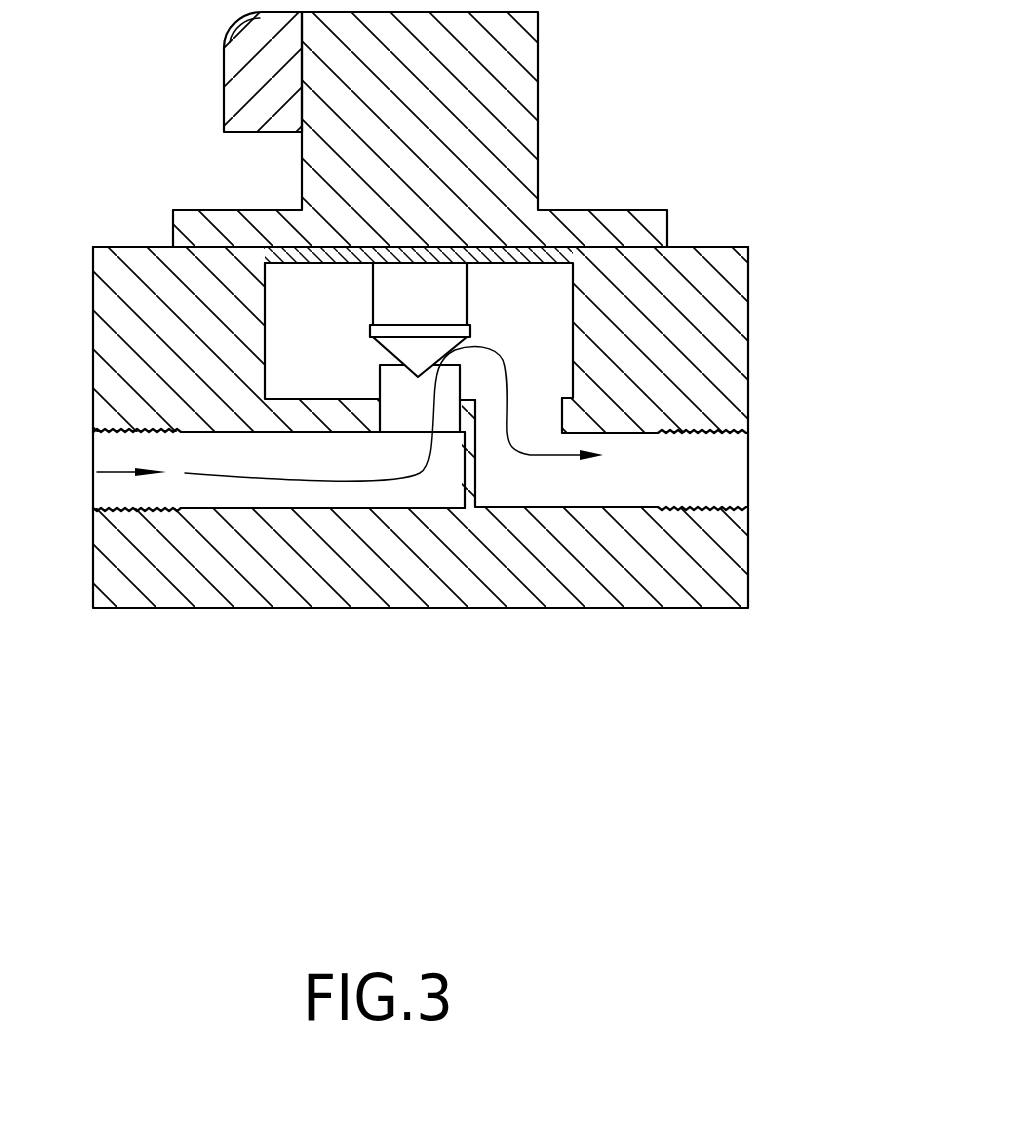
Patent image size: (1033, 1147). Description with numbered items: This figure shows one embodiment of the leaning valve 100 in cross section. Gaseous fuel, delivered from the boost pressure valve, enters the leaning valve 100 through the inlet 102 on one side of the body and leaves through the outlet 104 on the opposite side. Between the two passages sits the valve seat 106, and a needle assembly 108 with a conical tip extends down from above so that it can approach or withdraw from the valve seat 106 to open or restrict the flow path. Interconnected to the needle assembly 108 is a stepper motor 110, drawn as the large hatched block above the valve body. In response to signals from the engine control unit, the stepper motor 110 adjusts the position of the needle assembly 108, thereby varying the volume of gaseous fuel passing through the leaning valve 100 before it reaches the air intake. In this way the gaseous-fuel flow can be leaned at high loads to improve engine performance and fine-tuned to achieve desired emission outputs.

The leaning valve 100 is at (240, 670).
The inlet 102 is at (92, 450).
The outlet 104 is at (748, 447).
The valve seat 106 is at (380, 366).
The needle assembly 108 is at (450, 303).
The stepper motor 110 is at (538, 62).